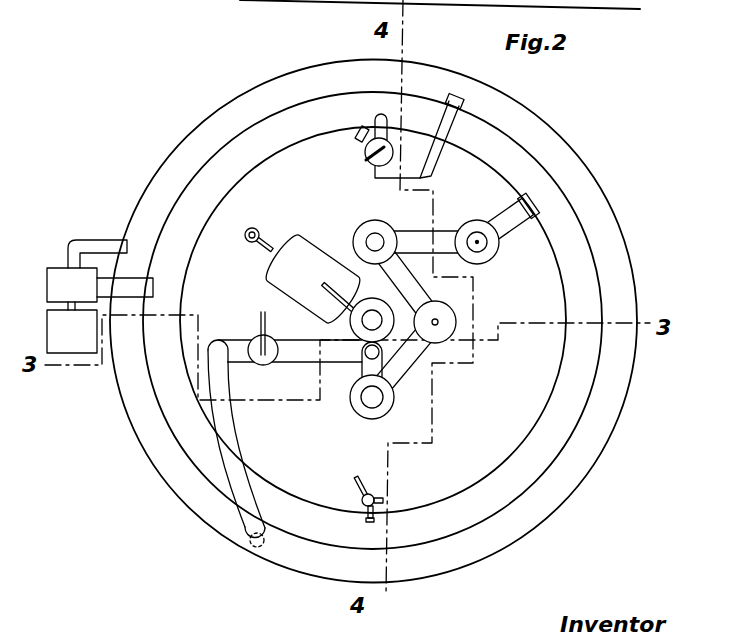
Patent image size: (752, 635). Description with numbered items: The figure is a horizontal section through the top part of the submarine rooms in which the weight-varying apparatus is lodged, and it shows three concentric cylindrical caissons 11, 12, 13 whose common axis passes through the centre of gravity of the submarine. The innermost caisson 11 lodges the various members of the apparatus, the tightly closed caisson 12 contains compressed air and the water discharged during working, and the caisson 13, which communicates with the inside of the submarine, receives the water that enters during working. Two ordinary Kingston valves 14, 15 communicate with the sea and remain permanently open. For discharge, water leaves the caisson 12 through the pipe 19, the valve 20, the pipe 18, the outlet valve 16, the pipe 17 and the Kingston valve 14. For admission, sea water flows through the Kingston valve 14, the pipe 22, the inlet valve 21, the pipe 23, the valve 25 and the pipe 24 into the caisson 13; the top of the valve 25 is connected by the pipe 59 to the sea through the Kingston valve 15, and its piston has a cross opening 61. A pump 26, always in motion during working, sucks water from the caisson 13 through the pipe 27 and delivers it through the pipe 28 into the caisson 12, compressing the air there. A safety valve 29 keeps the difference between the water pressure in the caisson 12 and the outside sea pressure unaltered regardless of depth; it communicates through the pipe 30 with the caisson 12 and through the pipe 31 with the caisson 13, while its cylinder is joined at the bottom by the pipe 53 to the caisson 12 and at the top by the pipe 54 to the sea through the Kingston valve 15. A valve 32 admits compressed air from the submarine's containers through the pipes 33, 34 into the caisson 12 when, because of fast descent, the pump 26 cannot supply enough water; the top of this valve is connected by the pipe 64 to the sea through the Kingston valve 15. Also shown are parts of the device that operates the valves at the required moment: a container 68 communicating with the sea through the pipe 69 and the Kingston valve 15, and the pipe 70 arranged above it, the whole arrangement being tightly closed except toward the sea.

The caisson 11 is at (373, 320).
The caisson 12 is at (372, 320).
The caisson 13 is at (373, 321).
The Kingston valve 14 is at (455, 318).
The Kingston valve 15 is at (258, 231).
The outlet valve 16 is at (393, 216).
The pipe 17 is at (407, 273).
The pipe 18 is at (428, 217).
The pipe 19 is at (510, 205).
The valve 20 is at (478, 222).
The inlet valve 21 is at (356, 407).
The pipe 22 is at (400, 370).
The pipe 23 is at (363, 370).
The pipe 24 is at (228, 423).
The valve 25 is at (262, 365).
The pump 26 is at (62, 268).
The pipe 27 is at (85, 246).
The pipe 28 is at (135, 276).
The safety valve 29 is at (365, 152).
The pipe 30 is at (389, 127).
The pipe 31 is at (437, 153).
The valve 32 is at (362, 500).
The pipe 33 is at (384, 499).
The pipe 34 is at (366, 515).
The pipe 53 is at (358, 137).
The pipe 54 is at (366, 160).
The pipe 59 is at (260, 321).
The cross opening 61 is at (389, 320).
The pipe 64 is at (356, 478).
The container 68 is at (267, 282).
The pipe 69 is at (252, 243).
The pipe 70 is at (350, 323).